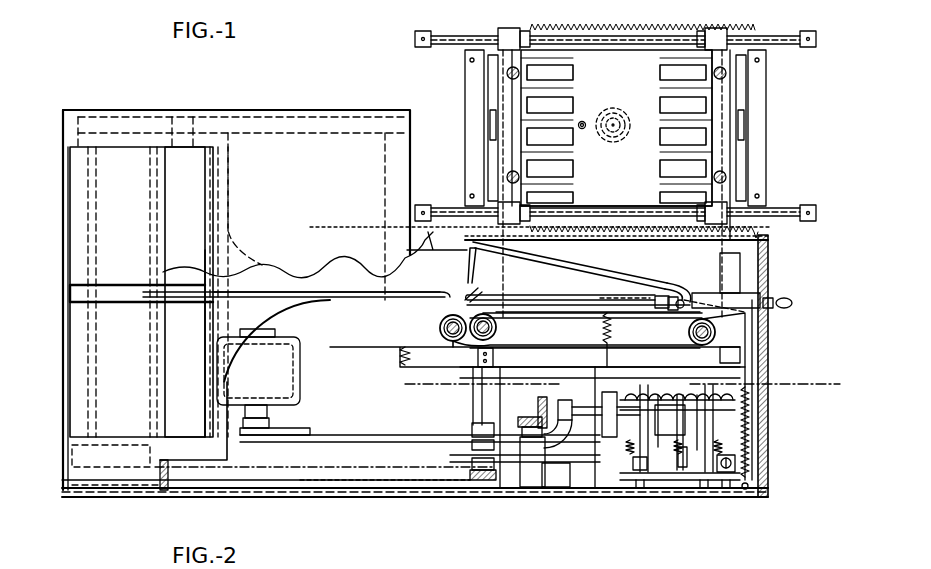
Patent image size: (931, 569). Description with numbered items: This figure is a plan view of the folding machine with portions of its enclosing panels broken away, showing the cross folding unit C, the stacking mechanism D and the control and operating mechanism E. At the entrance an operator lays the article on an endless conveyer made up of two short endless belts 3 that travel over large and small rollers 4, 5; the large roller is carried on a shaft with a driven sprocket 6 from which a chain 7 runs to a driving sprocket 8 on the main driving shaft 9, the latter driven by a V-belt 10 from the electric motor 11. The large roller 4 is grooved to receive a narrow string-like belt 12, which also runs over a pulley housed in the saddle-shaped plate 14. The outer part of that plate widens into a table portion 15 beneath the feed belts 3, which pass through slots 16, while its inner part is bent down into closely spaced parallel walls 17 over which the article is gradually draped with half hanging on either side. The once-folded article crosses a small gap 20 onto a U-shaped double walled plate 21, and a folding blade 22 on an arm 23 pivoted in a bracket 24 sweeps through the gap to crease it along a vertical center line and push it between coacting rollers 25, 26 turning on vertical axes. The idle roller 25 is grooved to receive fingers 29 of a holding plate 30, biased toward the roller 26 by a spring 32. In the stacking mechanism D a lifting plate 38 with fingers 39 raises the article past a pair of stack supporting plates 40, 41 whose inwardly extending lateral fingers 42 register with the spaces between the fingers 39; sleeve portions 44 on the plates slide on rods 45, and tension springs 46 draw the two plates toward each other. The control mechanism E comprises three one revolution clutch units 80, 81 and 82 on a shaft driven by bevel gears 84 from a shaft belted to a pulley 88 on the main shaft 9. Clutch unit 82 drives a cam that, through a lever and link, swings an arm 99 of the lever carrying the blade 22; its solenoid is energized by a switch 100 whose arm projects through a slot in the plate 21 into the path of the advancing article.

The endless belts 3 is at (140, 318).
The large roller 4 is at (158, 145).
The small roller 5 is at (92, 145).
The driven sprocket 6 is at (424, 385).
The chain 7 is at (357, 472).
The driving sprocket 8 is at (495, 477).
The main driving shaft 9 is at (482, 405).
The V-belt 10 is at (348, 435).
The electric motor 11 is at (292, 362).
The narrow belt 12 is at (262, 295).
The plate 14 is at (650, 372).
The table portion 15 is at (127, 455).
The slots 16 is at (75, 145).
The parallel walls 17 is at (377, 303).
The gap 20 is at (467, 293).
The U-shaped double walled plate 21 is at (573, 300).
The folding blade 22 is at (467, 265).
The arm 23 is at (670, 281).
The bracket 24 is at (715, 298).
The roller 25 is at (440, 330).
The roller 26 is at (497, 330).
The fingers 29 is at (478, 340).
The holding plate 30 is at (553, 350).
The spring 32 is at (608, 330).
The lifting plate 38 is at (616, 128).
The fingers 39 is at (698, 152).
The stack supporting plate 40 is at (555, 58).
The stack supporting plate 41 is at (684, 60).
The lateral fingers 42 is at (565, 113).
The sleeve portions 44 is at (510, 30).
The rods 45 is at (474, 33).
The tension springs 46 is at (612, 22).
The one revolution clutch unit 80 is at (650, 483).
The one revolution clutch unit 81 is at (695, 443).
The one revolution clutch unit 82 is at (717, 430).
The bevel gears 84 is at (522, 430).
The pulley 88 is at (450, 457).
The arm 99 is at (743, 315).
The switch 100 is at (655, 300).
The cross folding unit C is at (473, 300).
The stacking mechanism D is at (735, 140).
The control and operating mechanism E is at (678, 463).